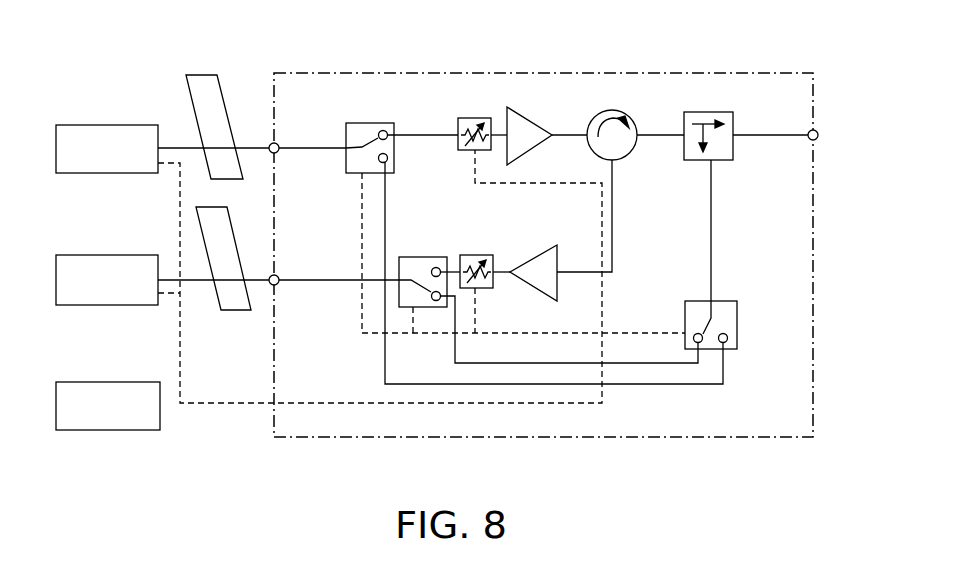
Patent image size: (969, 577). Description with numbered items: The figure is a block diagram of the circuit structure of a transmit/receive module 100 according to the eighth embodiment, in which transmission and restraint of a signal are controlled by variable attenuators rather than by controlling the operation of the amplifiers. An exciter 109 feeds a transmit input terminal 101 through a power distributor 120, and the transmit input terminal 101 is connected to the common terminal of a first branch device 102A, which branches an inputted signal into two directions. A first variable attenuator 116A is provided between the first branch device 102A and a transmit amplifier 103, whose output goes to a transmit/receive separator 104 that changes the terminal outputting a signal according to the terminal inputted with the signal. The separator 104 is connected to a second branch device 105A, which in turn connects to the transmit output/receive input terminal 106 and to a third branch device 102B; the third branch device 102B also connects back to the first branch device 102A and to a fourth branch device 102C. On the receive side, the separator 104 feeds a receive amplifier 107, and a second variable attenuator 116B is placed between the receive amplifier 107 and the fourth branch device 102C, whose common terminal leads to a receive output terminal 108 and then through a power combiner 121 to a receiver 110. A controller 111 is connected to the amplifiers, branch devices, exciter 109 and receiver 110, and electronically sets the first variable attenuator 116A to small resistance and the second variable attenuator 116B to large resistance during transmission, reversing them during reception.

The transmit/receive module 100 is at (436, 65).
The transmit input terminal 101 is at (276, 143).
The first branch device 102A is at (366, 123).
The third branch device 102B is at (697, 301).
The fourth branch device 102C is at (416, 257).
The transmit amplifier 103 is at (528, 118).
The transmit/receive separator 104 is at (631, 116).
The second branch device 105A is at (706, 112).
The transmit output/receive input terminal 106 is at (817, 131).
The receive amplifier 107 is at (544, 250).
The receive output terminal 108 is at (276, 275).
The exciter 109 is at (107, 125).
The receiver 110 is at (107, 255).
The controller 111 is at (107, 382).
The first variable attenuator 116A is at (470, 118).
The second variable attenuator 116B is at (476, 255).
The power distributor 120 is at (205, 75).
The power combiner 121 is at (234, 310).